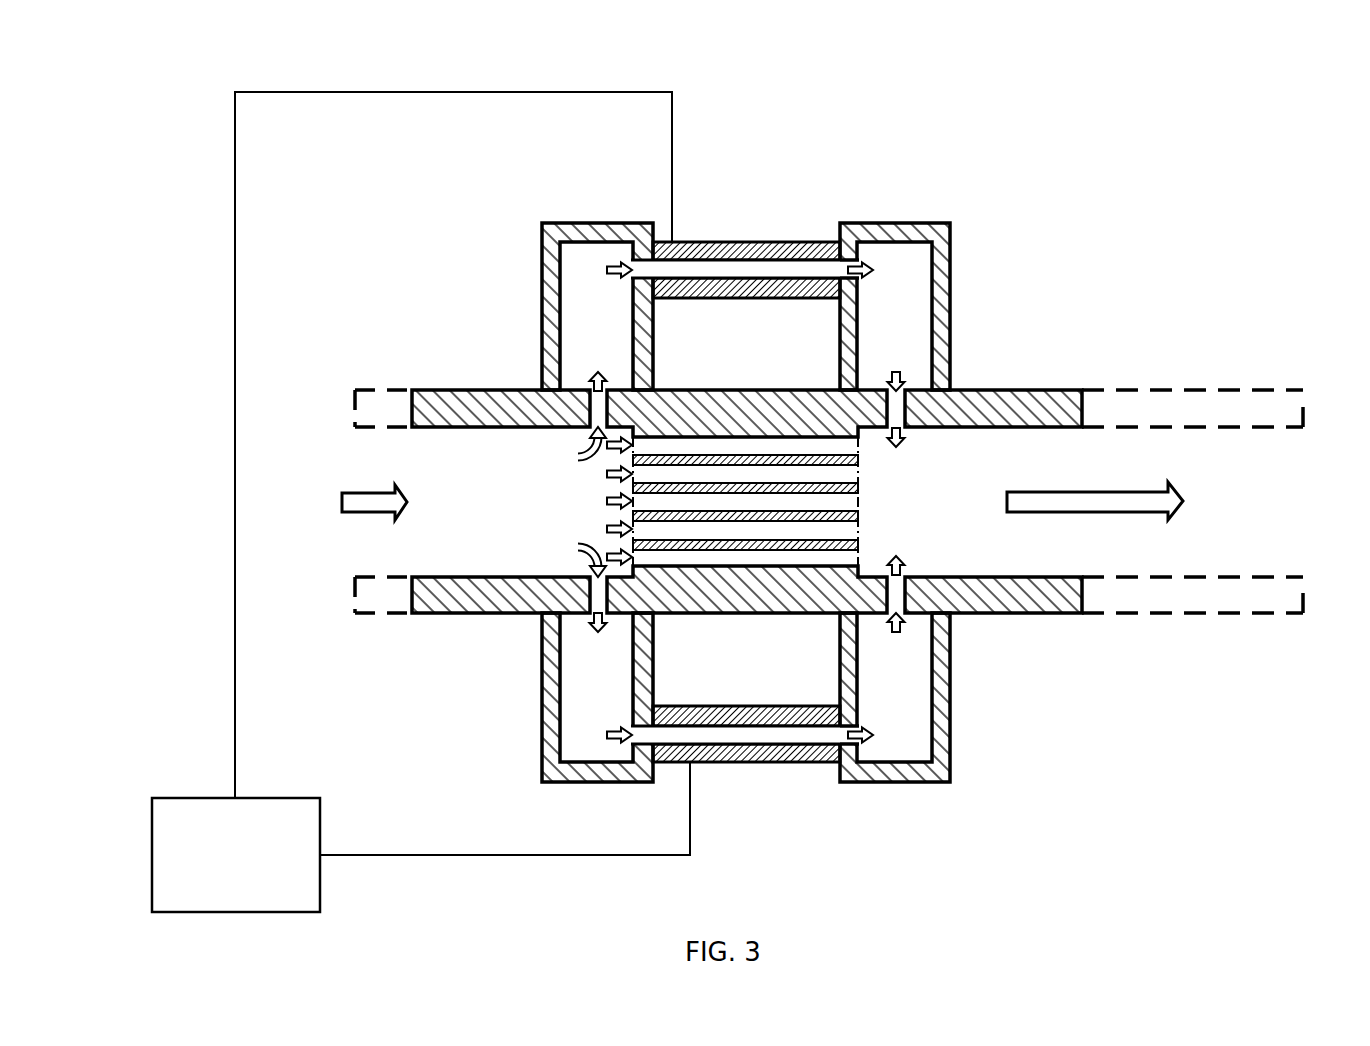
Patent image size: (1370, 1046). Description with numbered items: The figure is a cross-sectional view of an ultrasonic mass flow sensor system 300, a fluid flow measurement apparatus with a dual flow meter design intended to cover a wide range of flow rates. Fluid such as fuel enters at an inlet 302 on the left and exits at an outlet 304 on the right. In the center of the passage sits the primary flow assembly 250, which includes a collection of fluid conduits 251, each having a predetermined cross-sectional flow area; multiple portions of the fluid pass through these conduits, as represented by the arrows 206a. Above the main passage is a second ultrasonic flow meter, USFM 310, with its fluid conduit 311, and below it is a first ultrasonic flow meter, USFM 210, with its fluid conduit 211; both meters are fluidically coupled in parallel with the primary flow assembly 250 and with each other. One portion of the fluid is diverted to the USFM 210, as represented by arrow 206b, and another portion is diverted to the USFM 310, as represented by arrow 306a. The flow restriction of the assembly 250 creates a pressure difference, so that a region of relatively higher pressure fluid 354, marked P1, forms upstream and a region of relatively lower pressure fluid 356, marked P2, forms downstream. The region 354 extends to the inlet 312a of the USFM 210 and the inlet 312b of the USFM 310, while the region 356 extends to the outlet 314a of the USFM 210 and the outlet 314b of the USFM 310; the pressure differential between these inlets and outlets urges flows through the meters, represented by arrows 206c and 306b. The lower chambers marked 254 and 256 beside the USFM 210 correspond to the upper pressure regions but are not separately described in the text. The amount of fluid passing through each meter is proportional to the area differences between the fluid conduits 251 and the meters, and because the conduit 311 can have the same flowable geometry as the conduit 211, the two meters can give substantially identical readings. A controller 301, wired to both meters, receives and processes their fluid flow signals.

The ultrasonic mass flow sensor system 300 is at (186, 91).
The controller 301 is at (236, 855).
The inlet 302 is at (392, 463).
The outlet 304 is at (1280, 463).
The region of relatively higher pressure fluid 354 is at (573, 266).
The region of relatively lower pressure fluid 356 is at (914, 292).
The lower first pressure chamber P1 254 is at (578, 653).
The lower second pressure chamber P2 256 is at (912, 742).
The primary flow assembly 250 is at (835, 383).
The fluid conduits 251 is at (847, 507).
The ultrasonic flow meter (USFM) 310 is at (783, 240).
The fluid conduit 311 is at (805, 258).
The ultrasonic flow meter (USFM) 210 is at (673, 763).
The fluid conduit 211 is at (747, 745).
The inlet of the USFM 310 312b is at (616, 284).
The outlet of the USFM 310 314b is at (876, 255).
The inlet of the USFM 210 312a is at (618, 716).
The outlet of the USFM 210 314a is at (875, 720).
The arrow representing fluid flow through the USFM 310 306b is at (611, 261).
The arrow representing fluid flow through the USFM 210 206c is at (612, 744).
The arrow representing portion of fluid flowing to the USFM 310 306a is at (580, 443).
The arrow representing portion of fluid flowing to the USFM 210 206b is at (580, 550).
The arrows representing fluid flow through the fluid conduits 206a is at (607, 500).